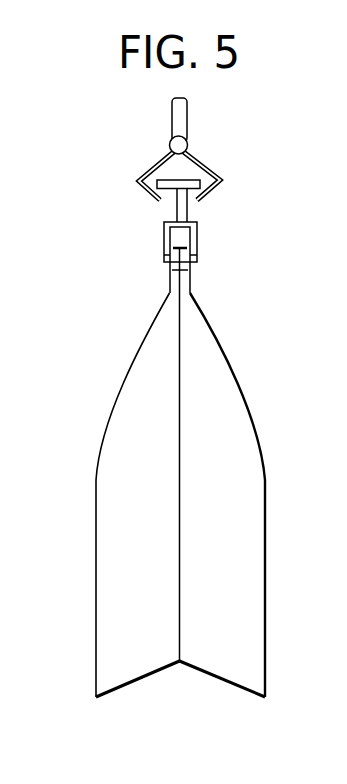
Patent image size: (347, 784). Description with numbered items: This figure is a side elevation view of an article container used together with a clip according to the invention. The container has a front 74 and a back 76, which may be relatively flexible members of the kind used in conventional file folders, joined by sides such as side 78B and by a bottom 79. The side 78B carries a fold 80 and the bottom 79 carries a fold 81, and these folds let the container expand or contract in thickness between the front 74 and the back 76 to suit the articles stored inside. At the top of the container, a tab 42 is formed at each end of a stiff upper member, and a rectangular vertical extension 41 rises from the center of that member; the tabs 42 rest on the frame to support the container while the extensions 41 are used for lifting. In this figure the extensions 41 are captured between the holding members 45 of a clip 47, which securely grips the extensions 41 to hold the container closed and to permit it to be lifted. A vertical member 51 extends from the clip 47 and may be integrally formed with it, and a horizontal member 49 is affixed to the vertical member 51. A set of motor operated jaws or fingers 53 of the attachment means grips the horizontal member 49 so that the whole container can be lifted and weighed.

The rectangular vertical extension 41 is at (170, 258).
The tab 42 is at (172, 281).
The holding members 45 is at (164, 240).
The clip 47 is at (208, 217).
The horizontal member 49 is at (181, 180).
The vertical member 51 is at (174, 214).
The jaws or fingers 53 is at (152, 163).
The front 74 is at (95, 515).
The back 76 is at (267, 513).
The side 78B is at (198, 492).
The bottom 79 is at (220, 680).
The fold 80 is at (180, 408).
The fold 81 is at (178, 664).